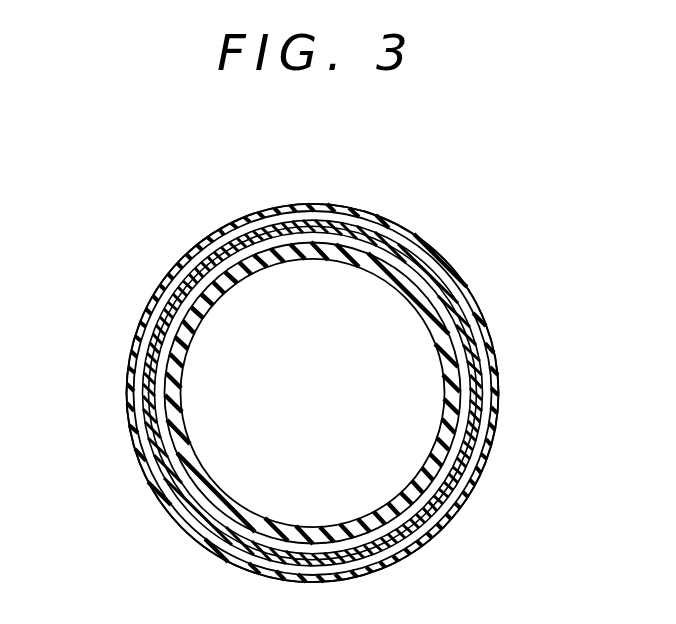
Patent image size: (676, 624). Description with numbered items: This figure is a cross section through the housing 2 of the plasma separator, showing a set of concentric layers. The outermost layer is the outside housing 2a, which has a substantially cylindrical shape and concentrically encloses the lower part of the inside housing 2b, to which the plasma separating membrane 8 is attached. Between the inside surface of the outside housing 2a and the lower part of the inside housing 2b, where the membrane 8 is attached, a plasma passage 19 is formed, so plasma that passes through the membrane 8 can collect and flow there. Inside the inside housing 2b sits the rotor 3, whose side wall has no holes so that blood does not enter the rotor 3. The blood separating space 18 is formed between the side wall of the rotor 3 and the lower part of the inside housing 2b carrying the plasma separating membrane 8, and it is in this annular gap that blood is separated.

The housing 2 is at (140, 478).
The outside housing 2a is at (430, 237).
The inside housing 2b is at (478, 406).
The rotor 3 is at (172, 296).
The plasma separating membrane 8 is at (487, 335).
The blood separating space 18 is at (163, 353).
The plasma passage 19 is at (462, 490).